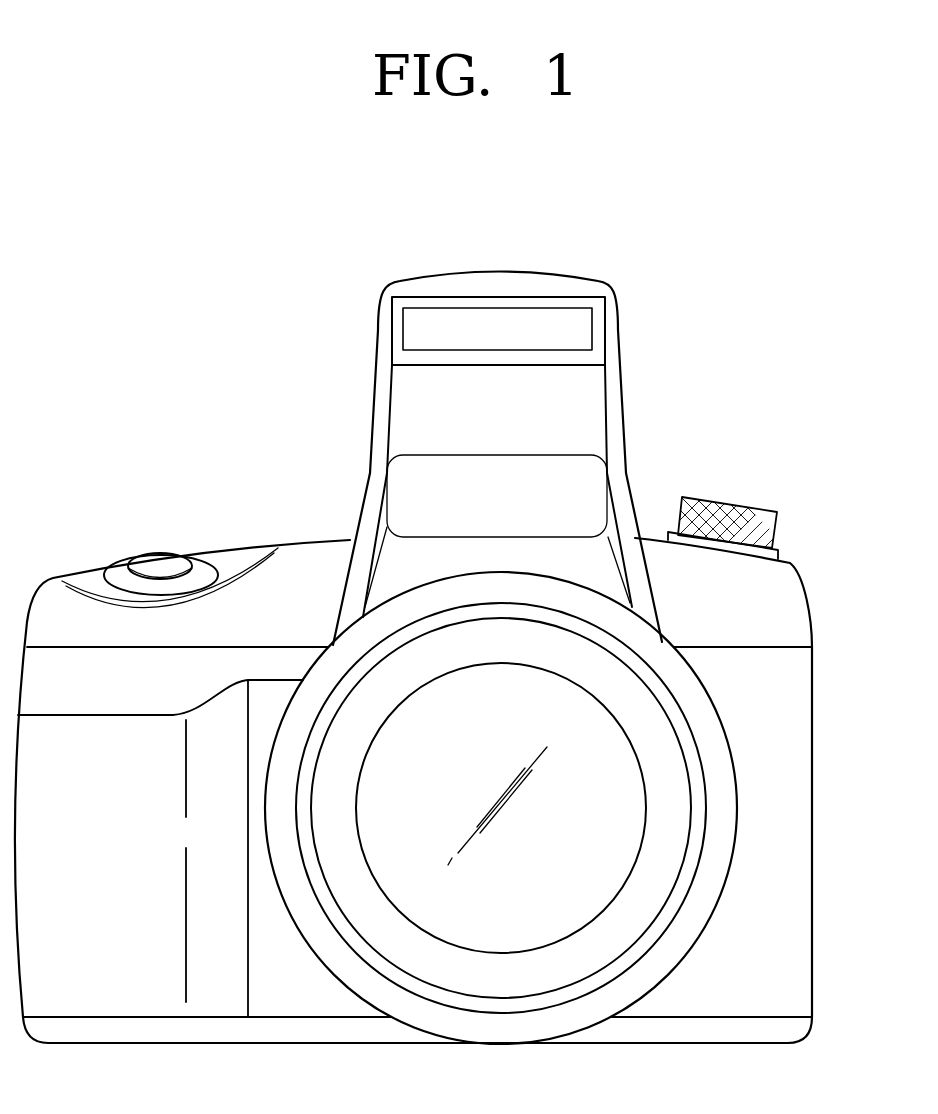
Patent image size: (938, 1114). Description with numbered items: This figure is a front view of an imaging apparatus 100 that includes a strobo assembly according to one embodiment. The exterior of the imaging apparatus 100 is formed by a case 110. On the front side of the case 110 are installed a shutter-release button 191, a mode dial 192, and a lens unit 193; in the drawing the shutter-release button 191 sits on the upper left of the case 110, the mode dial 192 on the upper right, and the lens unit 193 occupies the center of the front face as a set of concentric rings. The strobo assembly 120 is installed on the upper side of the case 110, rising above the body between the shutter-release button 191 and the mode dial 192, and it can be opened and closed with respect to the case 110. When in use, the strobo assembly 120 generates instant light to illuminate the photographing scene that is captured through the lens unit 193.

The imaging apparatus 100 is at (822, 566).
The case 110 is at (783, 712).
The strobo assembly 120 is at (594, 322).
The shutter-release button 191 is at (162, 567).
The mode dial 192 is at (733, 503).
The lens unit 193 is at (722, 812).